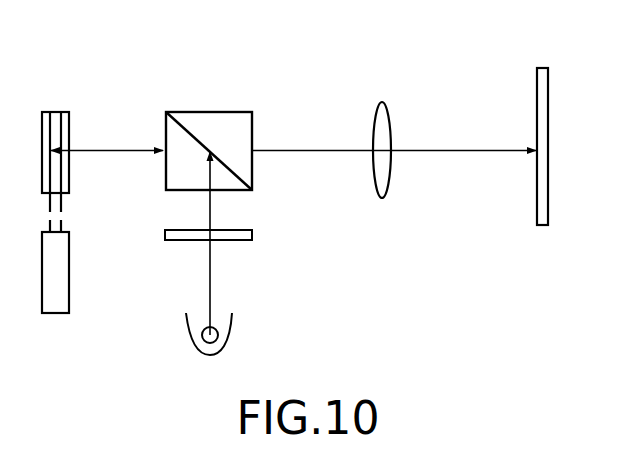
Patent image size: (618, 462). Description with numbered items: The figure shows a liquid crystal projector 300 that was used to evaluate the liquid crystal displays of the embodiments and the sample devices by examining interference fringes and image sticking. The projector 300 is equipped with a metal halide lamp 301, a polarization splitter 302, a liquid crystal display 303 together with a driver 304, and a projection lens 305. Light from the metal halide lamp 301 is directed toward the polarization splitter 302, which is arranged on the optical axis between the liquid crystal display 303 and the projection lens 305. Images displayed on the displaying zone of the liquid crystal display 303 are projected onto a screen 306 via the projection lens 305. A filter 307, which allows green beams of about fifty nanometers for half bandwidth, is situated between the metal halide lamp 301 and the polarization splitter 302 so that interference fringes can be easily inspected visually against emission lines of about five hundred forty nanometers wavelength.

The projector 300 is at (73, 28).
The metal halide lamp 301 is at (220, 338).
The polarization splitter 302 is at (224, 117).
The liquid crystal display 303 is at (55, 111).
The driver 304 is at (56, 306).
The projection lens 305 is at (382, 101).
The screen 306 is at (536, 210).
The filter 307 is at (253, 234).